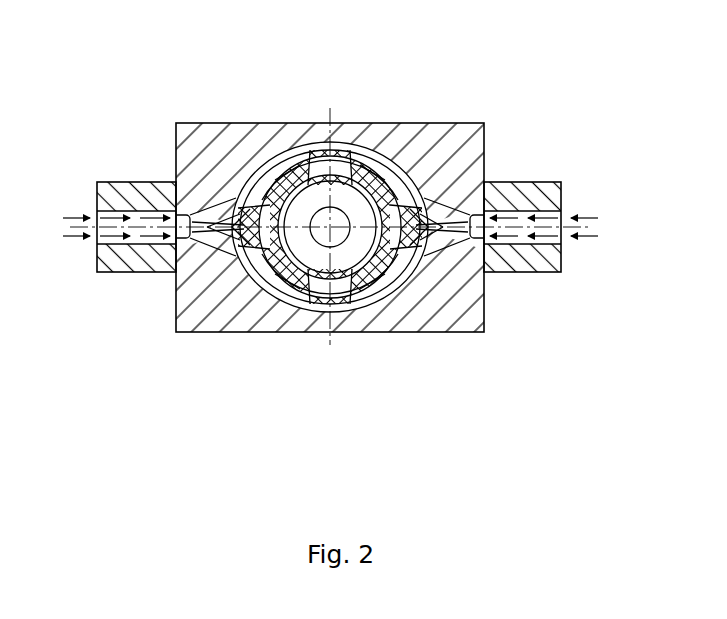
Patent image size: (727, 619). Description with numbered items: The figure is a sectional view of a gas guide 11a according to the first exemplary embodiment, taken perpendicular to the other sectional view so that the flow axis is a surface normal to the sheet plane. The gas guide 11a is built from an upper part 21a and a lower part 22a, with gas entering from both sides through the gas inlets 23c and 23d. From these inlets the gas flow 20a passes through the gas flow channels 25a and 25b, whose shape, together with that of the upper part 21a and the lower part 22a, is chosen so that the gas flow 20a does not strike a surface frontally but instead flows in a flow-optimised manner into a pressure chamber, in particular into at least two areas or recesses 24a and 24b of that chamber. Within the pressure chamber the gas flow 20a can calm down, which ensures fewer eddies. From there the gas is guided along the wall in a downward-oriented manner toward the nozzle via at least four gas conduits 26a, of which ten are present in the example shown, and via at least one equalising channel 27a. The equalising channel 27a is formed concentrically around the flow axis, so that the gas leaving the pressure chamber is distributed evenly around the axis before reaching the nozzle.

The gas guide 11a is at (153, 335).
The gas flow 20a is at (340, 258).
The upper part 21a is at (226, 151).
The lower part 22a is at (342, 162).
The gas inlet 23c is at (128, 198).
The gas inlet 23d is at (513, 195).
The recess of the pressure chamber 24a is at (263, 277).
The recess of the pressure chamber 24b is at (402, 180).
The gas flow channel 25a is at (207, 227).
The gas flow channel 25b is at (443, 227).
The gas conduit 26a is at (288, 278).
The equalising channel 27a is at (373, 270).